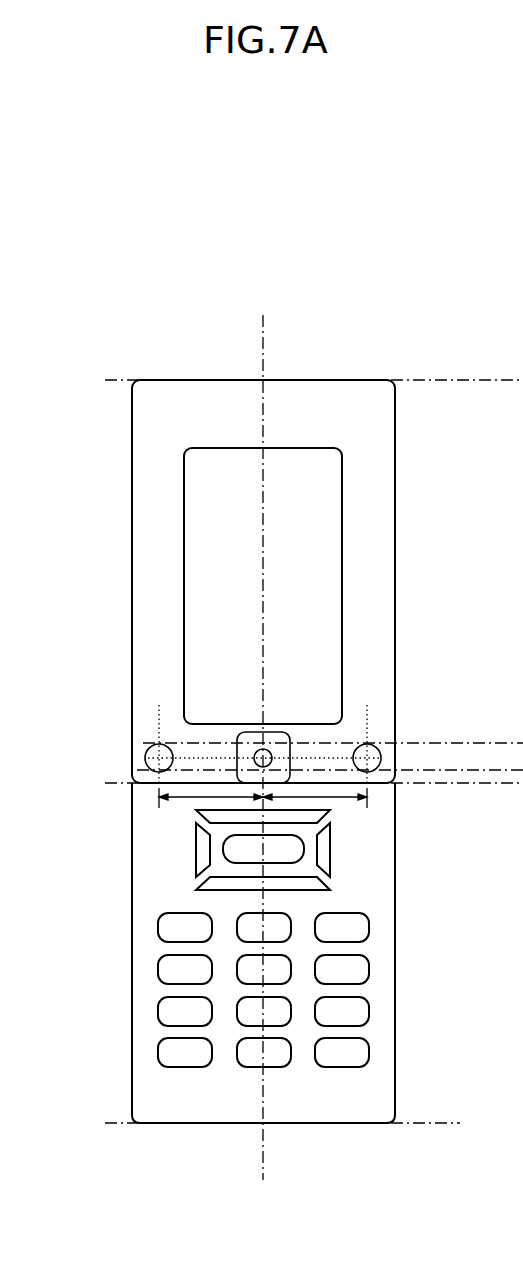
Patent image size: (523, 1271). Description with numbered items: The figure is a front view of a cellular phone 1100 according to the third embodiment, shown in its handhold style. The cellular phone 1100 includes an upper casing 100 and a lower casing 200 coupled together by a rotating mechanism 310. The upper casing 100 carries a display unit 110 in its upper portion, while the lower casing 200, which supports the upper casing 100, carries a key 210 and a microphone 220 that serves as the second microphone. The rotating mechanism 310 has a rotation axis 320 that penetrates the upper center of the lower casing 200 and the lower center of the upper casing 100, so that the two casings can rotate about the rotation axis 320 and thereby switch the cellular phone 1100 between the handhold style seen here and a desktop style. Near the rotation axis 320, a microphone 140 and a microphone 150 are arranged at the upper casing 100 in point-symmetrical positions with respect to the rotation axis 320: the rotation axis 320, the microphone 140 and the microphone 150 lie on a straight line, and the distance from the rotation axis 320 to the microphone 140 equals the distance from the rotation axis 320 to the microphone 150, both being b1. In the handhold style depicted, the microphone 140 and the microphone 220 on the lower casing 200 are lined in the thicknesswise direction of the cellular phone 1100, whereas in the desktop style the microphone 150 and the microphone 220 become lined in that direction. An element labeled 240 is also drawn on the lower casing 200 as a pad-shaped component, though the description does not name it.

The cellular phone 1100 is at (262, 242).
The upper casing 100 is at (367, 393).
The display unit 110 is at (317, 537).
The microphone 140 is at (148, 743).
The microphone 150 is at (372, 755).
The rotation axis 320 is at (237, 752).
The rotating mechanism 310 is at (237, 760).
The microphone 220 is at (150, 764).
The lower casing 200 is at (327, 1097).
The navigation key 240 is at (200, 805).
The key 210 is at (173, 902).
The distance b1 is at (186, 803).